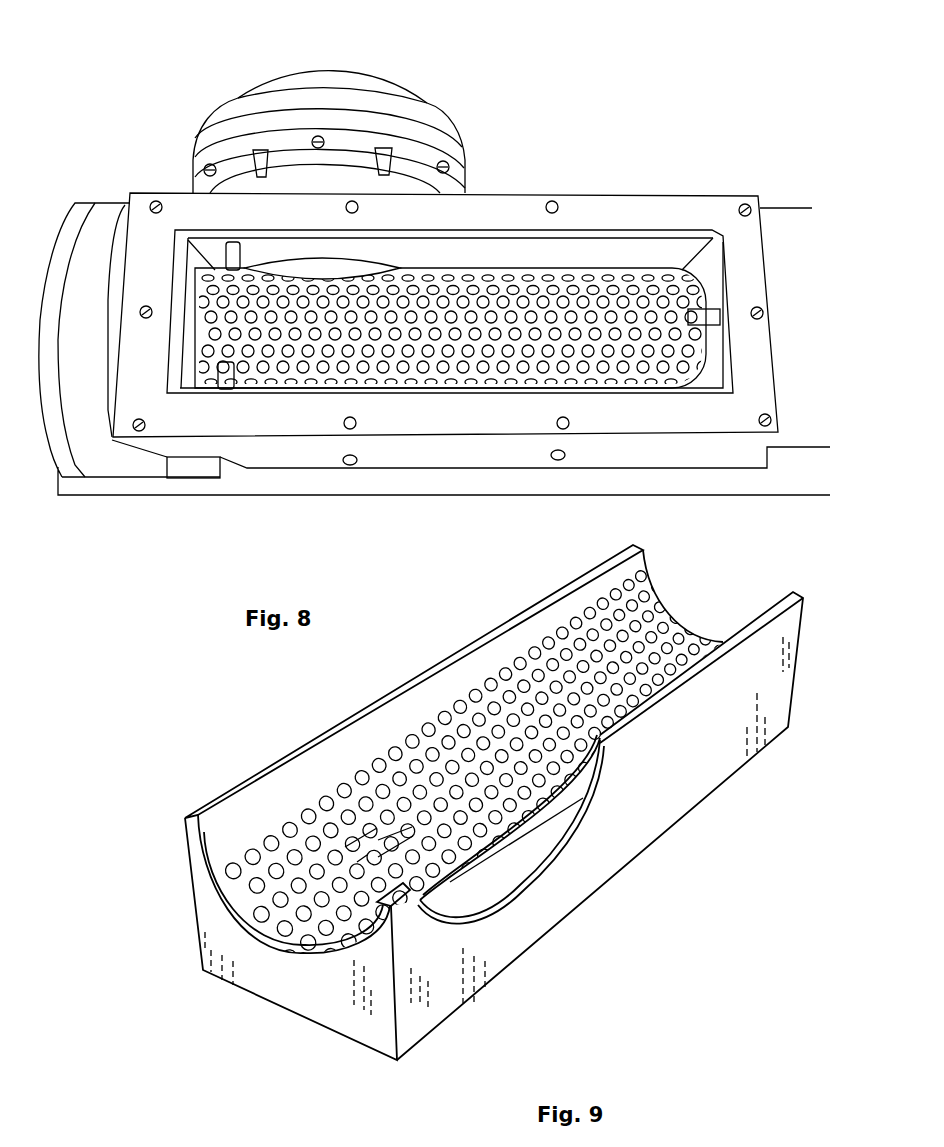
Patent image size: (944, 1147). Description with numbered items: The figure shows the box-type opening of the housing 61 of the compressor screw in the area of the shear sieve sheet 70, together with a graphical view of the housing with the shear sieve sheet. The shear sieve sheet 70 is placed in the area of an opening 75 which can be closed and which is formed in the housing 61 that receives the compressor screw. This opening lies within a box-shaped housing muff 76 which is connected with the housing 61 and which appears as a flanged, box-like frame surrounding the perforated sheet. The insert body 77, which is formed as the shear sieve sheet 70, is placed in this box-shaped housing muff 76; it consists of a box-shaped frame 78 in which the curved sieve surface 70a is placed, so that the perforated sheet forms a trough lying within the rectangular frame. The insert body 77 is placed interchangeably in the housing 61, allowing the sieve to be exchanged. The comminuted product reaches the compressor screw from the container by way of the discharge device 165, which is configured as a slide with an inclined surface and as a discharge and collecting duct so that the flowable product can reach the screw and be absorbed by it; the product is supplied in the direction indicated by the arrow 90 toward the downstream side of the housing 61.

In FIG. 8, the discharge device 165 is at (349, 45).
In FIG. 8, the box-shaped housing muff 76 is at (593, 207).
In FIG. 8, the opening 75 is at (600, 288).
In FIG. 9, the opening 75 is at (482, 693).
In FIG. 8, the discharge direction 90 is at (818, 309).
In FIG. 8, the shear sieve sheet 70 is at (320, 355).
In FIG. 8, the housing 61 is at (453, 485).
In FIG. 9, the curved sieve surface 70a is at (670, 625).
In FIG. 9, the box-shaped frame 78 is at (638, 852).
In FIG. 9, the insert body 77 is at (557, 936).